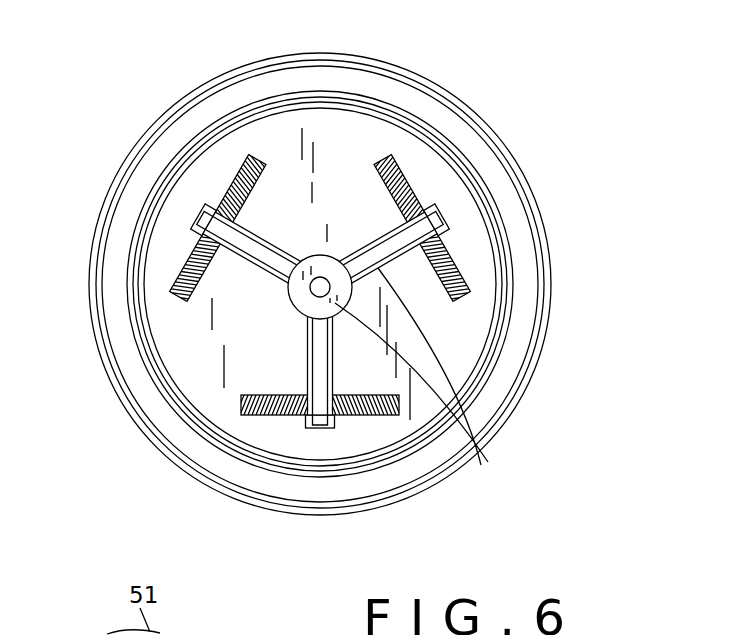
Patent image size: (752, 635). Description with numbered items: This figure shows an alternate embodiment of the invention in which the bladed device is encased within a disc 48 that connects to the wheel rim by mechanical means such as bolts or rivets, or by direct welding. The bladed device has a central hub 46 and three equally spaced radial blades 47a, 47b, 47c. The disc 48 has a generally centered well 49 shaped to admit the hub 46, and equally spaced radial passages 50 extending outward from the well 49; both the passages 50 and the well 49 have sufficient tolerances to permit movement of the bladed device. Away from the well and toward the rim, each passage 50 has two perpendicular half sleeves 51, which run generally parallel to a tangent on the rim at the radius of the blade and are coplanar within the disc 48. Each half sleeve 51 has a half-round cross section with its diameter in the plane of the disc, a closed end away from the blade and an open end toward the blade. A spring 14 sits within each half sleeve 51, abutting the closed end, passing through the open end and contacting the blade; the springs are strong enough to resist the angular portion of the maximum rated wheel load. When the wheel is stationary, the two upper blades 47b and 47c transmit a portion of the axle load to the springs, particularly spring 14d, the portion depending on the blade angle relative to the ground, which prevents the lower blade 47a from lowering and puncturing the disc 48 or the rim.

The spring 14 is at (235, 168).
The spring 14d is at (186, 252).
The central hub 46 is at (420, 386).
The radial blade 47a is at (306, 426).
The radial blade 47b is at (193, 205).
The radial blade 47c is at (446, 215).
The disc 48 is at (458, 333).
The well 49 is at (289, 304).
The radial passage 50 is at (312, 344).
The half sleeve 51 is at (257, 150).